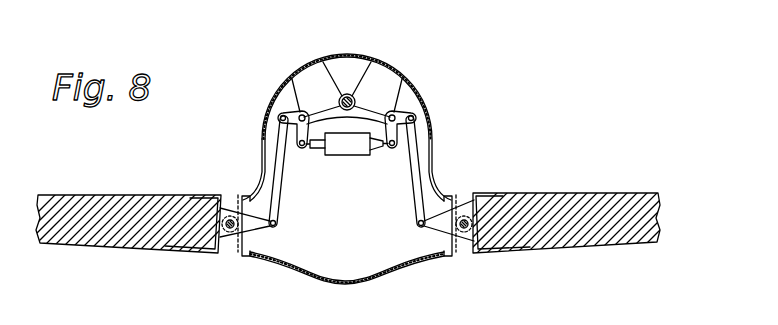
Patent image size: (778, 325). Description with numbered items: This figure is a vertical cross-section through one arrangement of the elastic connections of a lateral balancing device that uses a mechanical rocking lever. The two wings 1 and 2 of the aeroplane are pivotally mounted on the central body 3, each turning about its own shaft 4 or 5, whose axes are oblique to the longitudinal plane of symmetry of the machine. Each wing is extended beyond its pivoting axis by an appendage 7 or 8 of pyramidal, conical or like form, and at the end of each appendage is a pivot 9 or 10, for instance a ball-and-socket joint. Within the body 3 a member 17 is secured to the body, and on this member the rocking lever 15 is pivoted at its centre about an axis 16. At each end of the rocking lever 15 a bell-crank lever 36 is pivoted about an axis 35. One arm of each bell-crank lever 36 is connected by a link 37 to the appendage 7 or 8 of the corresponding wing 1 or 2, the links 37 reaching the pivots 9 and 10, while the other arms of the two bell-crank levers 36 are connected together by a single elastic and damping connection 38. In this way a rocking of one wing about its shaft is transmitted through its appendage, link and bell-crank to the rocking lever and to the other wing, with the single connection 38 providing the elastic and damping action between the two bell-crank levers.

The wing 1 is at (520, 208).
The wing 2 is at (131, 207).
The central body 3 is at (432, 172).
The shaft 4 is at (463, 229).
The shaft 5 is at (230, 229).
The appendage 7 is at (432, 219).
The appendage 8 is at (247, 198).
The pivot 9 is at (417, 225).
The pivot 10 is at (277, 226).
The rocking lever 15 is at (373, 112).
The axis 16 is at (355, 100).
The member 17 is at (345, 78).
The axis 35 is at (300, 112).
The bell-crank lever 36 is at (283, 114).
The link 37 is at (278, 186).
The elastic and damping connection 38 is at (353, 148).